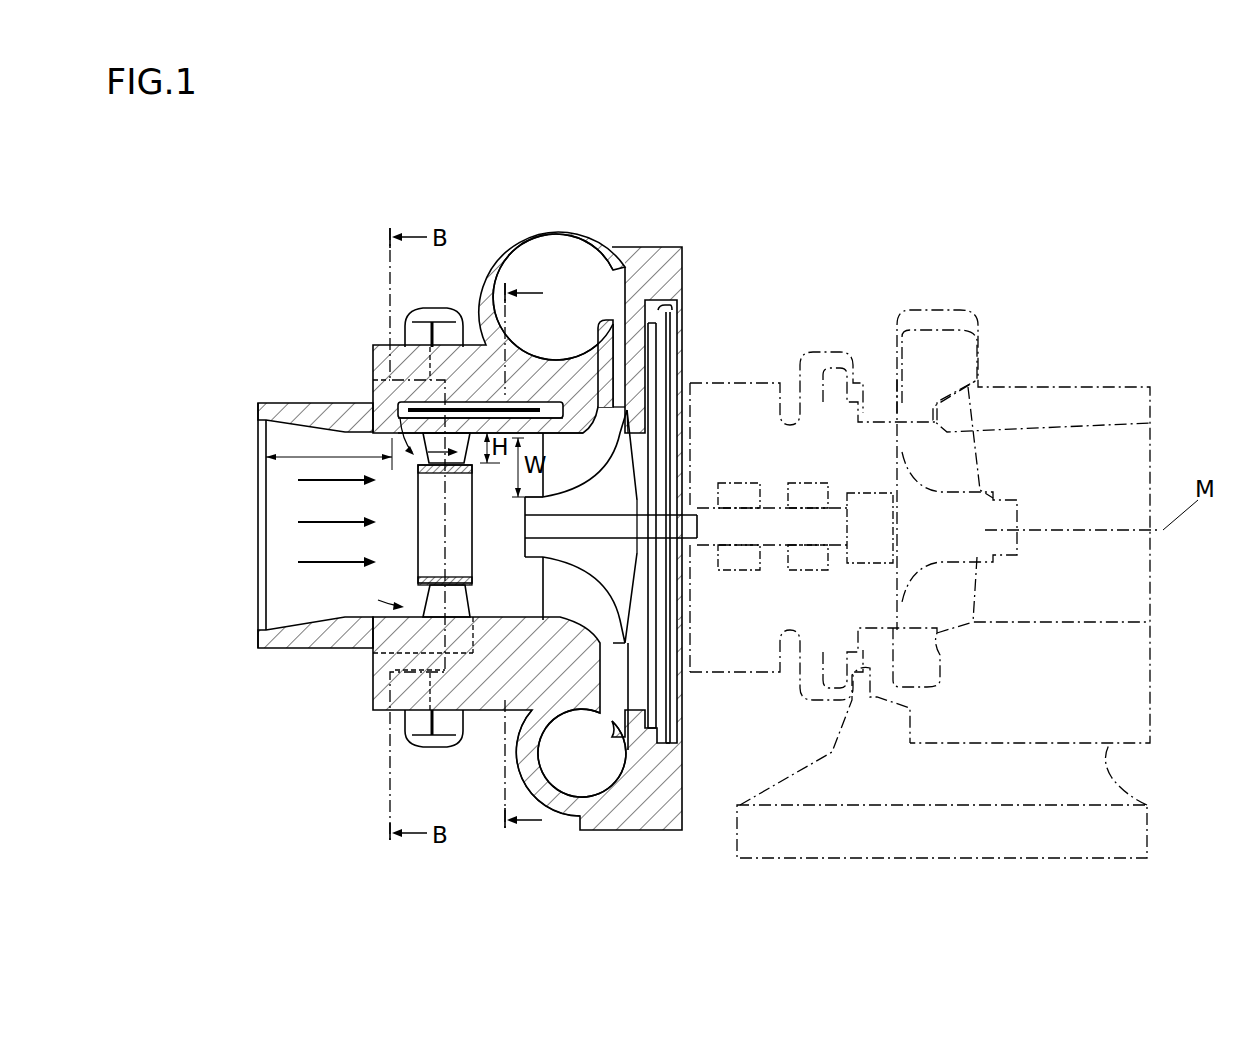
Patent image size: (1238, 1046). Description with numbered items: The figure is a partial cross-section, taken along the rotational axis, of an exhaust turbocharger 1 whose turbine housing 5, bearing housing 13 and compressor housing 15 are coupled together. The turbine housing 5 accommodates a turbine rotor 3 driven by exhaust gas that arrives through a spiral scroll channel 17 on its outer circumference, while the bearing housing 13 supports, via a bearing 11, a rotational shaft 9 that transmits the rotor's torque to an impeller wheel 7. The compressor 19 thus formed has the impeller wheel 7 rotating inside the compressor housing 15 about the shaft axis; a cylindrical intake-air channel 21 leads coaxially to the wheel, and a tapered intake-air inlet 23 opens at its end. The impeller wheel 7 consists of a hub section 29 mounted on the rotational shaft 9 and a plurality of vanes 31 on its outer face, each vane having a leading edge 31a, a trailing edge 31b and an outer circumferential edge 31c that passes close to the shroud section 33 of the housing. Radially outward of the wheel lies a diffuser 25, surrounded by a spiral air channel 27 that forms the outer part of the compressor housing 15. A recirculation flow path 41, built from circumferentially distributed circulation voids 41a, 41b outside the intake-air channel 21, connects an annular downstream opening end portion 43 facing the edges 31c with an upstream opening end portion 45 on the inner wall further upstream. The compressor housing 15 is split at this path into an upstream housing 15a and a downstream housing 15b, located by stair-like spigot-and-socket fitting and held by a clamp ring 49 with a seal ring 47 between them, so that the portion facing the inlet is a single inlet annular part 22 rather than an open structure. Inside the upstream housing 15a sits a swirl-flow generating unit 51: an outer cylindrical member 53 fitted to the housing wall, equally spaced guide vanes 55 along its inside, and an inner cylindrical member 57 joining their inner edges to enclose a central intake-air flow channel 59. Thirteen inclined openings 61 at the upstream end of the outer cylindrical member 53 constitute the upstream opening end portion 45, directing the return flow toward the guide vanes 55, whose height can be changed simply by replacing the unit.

The exhaust turbocharger 1 is at (900, 185).
The turbine rotor 3 is at (945, 478).
The turbine housing 5 is at (958, 310).
The impeller wheel 7 is at (655, 418).
The rotational shaft 9 is at (694, 545).
The bearing 11 is at (750, 670).
The bearing housing 13 is at (773, 695).
The compressor housing 15 is at (563, 218).
The upstream housing 15a is at (322, 652).
The downstream housing 15b is at (473, 718).
The scroll channel 17 is at (962, 345).
The compressor 19 is at (694, 218).
The intake-air channel 21 is at (283, 535).
The inlet annular part 22 is at (254, 398).
The intake-air inlet 23 is at (300, 532).
The diffuser 25 is at (672, 345).
The air channel 27 is at (574, 250).
The hub section 29 is at (658, 600).
The vanes 31 is at (617, 580).
The leading edge 31a is at (640, 465).
The trailing edge 31b is at (640, 400).
The outer circumferential edge 31c is at (640, 436).
The shroud section 33 is at (617, 270).
The recirculation flow path 41 is at (545, 398).
The circulation void 41a is at (382, 346).
The circulation void 41b is at (468, 338).
The downstream opening end portion 43 is at (552, 398).
The upstream opening end portion 45 is at (480, 429).
The seal ring 47 is at (434, 748).
The clamp ring 49 is at (408, 742).
The swirl-flow generating unit 51 is at (367, 598).
The outer cylindrical member 53 is at (376, 625).
The guide vanes 55 is at (465, 600).
The inner cylindrical member 57 is at (468, 578).
The central intake-air flow channel 59 is at (475, 540).
The openings 61 is at (396, 403).